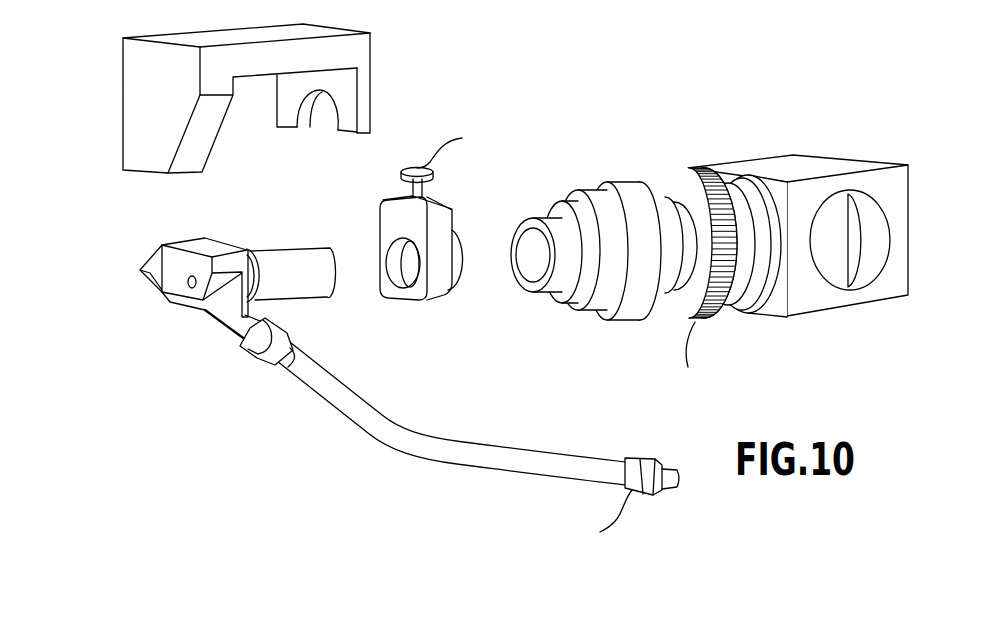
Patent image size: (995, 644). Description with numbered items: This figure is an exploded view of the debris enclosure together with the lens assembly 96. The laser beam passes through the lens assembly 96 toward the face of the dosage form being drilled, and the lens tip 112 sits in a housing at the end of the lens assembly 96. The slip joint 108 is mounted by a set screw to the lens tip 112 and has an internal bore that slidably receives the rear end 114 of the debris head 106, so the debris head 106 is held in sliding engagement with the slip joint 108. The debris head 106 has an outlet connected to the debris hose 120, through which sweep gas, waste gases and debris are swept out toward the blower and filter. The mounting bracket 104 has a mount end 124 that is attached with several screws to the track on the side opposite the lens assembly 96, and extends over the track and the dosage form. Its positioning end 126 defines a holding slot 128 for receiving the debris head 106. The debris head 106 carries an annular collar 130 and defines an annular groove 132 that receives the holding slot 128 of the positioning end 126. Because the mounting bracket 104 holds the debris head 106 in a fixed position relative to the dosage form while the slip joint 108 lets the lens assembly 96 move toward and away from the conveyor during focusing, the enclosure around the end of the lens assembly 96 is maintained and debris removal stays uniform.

The lens assembly 96 is at (709, 233).
The mounting bracket 104 is at (252, 130).
The debris head 106 is at (203, 313).
The slip joint 108 is at (452, 210).
The lens tip 112 is at (552, 292).
The rear end 114 is at (293, 298).
The debris hose 120 is at (370, 434).
The mount end 124 is at (135, 97).
The positioning end 126 is at (373, 92).
The holding slot 128 is at (325, 115).
The annular collar 130 is at (247, 243).
The annular groove 132 is at (252, 367).